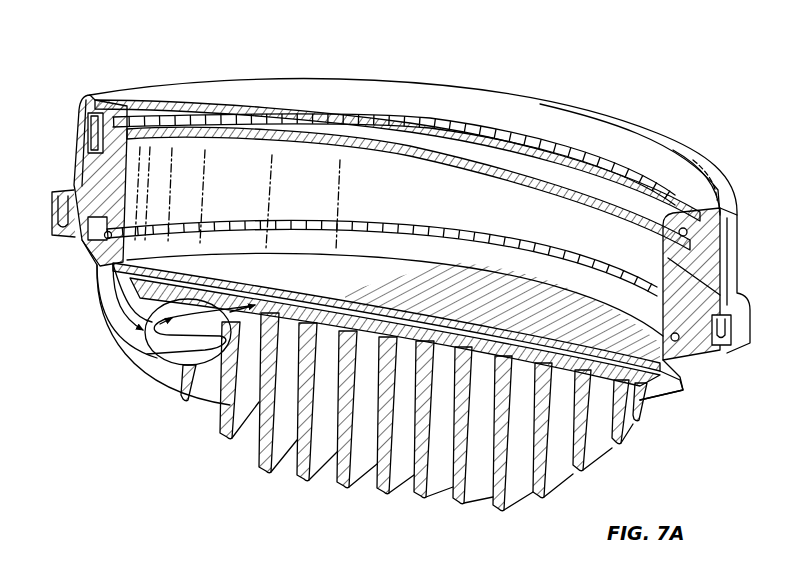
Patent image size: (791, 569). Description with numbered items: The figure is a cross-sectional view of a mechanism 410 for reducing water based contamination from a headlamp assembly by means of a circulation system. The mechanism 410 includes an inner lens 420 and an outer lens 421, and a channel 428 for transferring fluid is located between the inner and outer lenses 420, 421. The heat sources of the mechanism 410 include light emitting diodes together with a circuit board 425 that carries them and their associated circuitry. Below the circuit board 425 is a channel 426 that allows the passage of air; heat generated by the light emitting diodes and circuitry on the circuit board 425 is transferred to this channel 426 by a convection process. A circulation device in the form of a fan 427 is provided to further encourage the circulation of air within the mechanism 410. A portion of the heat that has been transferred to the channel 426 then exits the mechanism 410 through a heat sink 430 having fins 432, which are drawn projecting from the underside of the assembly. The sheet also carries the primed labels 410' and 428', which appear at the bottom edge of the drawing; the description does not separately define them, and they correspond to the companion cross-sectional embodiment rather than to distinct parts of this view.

The mechanism 410 is at (396, 215).
The channel 428 is at (397, 126).
The inner lens 420 is at (447, 160).
The outer lens 421 is at (618, 182).
The fan 427 is at (147, 351).
The fins 432 is at (219, 413).
The heat sink 430 is at (248, 455).
The circuit board 425 is at (643, 393).
The channel 426 is at (600, 360).
The luminaire (adjacent figure) 410' is at (60, 558).
The lens holder ring (adjacent figure) 428' is at (308, 558).